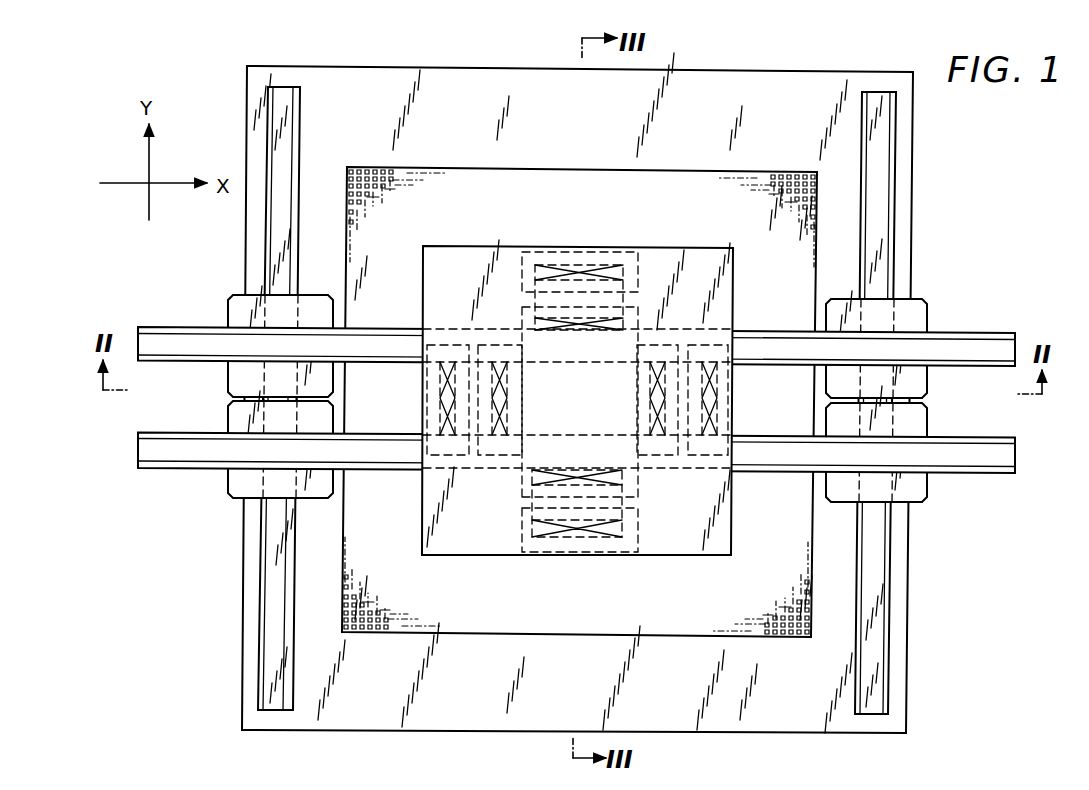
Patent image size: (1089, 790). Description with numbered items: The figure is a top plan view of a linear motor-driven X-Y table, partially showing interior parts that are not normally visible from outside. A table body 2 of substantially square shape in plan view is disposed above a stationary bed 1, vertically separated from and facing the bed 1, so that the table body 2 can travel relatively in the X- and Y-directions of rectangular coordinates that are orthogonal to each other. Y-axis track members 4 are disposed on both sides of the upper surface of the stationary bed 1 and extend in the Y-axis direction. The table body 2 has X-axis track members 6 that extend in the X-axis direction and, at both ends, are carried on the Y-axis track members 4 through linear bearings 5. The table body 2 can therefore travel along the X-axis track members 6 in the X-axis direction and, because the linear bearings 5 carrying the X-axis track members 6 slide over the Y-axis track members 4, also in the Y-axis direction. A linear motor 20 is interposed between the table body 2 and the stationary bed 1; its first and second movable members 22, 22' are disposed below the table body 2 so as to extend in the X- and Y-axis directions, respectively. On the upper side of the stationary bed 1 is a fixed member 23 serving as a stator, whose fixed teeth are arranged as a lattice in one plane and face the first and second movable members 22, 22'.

The stationary bed 1 is at (770, 79).
The table body 2 is at (421, 268).
The Y-axis track members 4 is at (266, 593).
The linear bearings 5 is at (236, 370).
The X-axis track members 6 is at (176, 327).
The linear motor 20 is at (649, 292).
The first movable member 22 is at (682, 436).
The second movable member 22' is at (474, 436).
The fixed member 23 is at (750, 632).